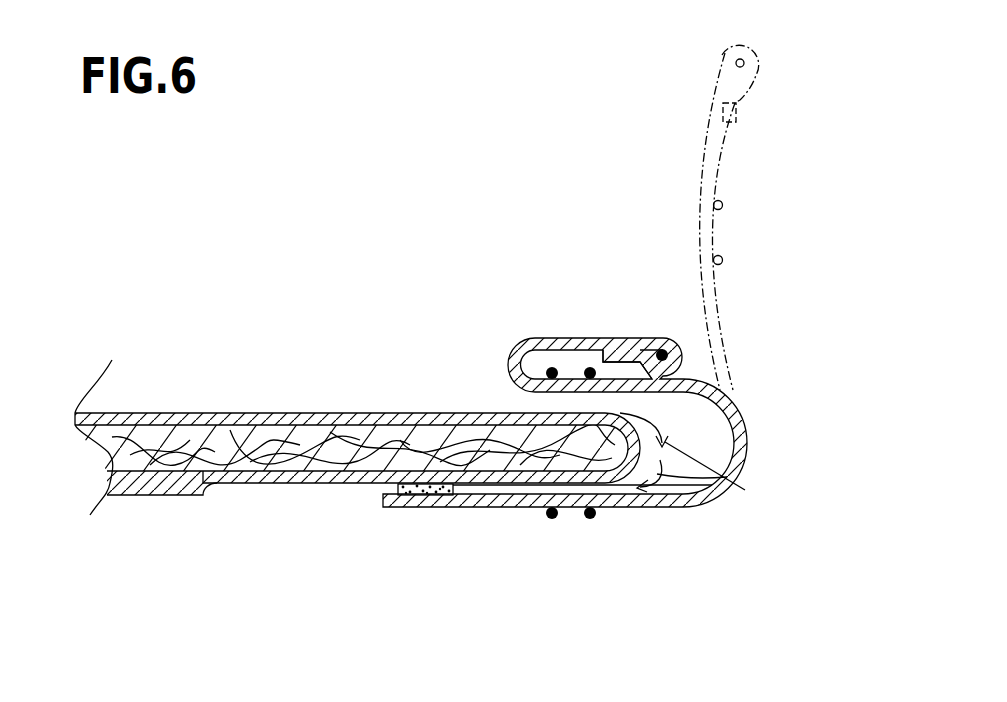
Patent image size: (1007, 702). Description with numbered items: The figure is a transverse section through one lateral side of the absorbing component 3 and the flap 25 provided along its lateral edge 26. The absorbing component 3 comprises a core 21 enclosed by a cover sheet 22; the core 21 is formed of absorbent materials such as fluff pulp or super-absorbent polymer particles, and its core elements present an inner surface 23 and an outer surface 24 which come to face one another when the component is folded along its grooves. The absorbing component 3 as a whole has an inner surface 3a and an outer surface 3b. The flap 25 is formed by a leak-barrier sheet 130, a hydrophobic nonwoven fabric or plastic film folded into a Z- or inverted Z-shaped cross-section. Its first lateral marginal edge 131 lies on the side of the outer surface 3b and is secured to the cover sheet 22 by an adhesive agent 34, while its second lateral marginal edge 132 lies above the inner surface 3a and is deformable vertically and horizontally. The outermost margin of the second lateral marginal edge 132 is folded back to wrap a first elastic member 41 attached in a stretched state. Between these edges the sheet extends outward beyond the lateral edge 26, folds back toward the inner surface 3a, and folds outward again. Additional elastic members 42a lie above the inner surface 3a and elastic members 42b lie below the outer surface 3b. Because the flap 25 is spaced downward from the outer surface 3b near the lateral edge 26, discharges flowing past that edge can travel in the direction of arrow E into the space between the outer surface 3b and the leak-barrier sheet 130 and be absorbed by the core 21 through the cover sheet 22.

The absorbing component 3 is at (357, 419).
The inner surface of the absorbing component 3a is at (468, 413).
The outer surface of the absorbing component 3b is at (607, 487).
The core 21 is at (243, 460).
The cover sheet 22 is at (188, 413).
The inner surface of the core element 23 is at (365, 425).
The outer surface of the core element 24 is at (306, 472).
The flap 25 is at (712, 206).
The lateral edge 26 is at (583, 402).
The adhesive agent 34 is at (437, 496).
The first elastic member 41 is at (662, 350).
The elastic members lying above the inner surface 42a is at (590, 368).
The elastic members lying below the outer surface 42b is at (590, 519).
The leak-barrier sheet 130 is at (558, 423).
The first lateral marginal edge 131 is at (418, 500).
The second lateral marginal edge 132 is at (607, 350).
The arrow indicating flow direction E is at (713, 476).